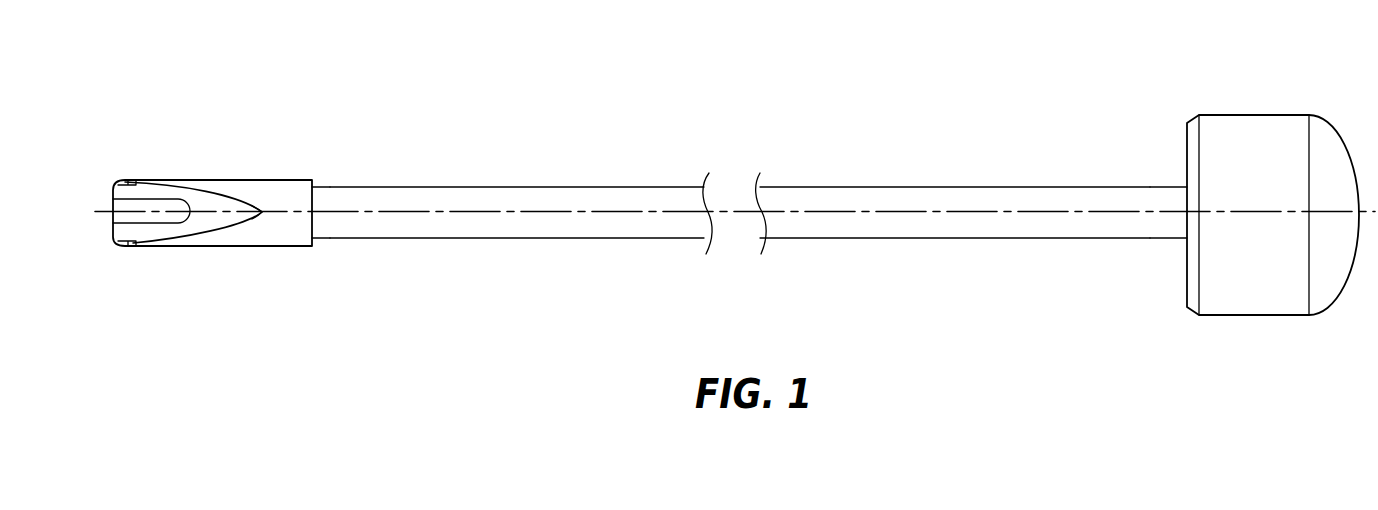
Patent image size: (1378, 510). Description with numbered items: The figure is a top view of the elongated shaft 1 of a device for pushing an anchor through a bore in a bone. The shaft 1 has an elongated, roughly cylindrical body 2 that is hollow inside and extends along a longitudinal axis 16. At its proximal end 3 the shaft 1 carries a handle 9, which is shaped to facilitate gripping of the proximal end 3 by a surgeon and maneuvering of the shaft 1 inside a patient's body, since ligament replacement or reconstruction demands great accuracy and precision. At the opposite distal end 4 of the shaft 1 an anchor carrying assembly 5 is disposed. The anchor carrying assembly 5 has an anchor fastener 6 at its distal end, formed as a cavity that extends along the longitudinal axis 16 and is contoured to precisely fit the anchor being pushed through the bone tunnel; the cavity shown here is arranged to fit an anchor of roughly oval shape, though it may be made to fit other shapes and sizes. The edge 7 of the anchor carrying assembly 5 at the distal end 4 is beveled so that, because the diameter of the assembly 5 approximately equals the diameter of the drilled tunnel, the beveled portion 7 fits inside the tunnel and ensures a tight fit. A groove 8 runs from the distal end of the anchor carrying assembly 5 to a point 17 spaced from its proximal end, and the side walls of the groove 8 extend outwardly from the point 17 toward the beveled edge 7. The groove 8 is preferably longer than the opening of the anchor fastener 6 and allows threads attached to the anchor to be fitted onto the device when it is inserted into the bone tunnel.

The elongated shaft 1 is at (1145, 80).
The body 2 is at (838, 188).
The proximal end 3 is at (1173, 233).
The distal end 4 is at (321, 240).
The anchor carrying assembly 5 is at (247, 187).
The anchor fastener 6 is at (130, 215).
The beveled edge 7 is at (117, 180).
The groove 8 is at (213, 217).
The handle 9 is at (1277, 140).
The longitudinal axis 16 is at (393, 212).
The point 17 is at (262, 214).